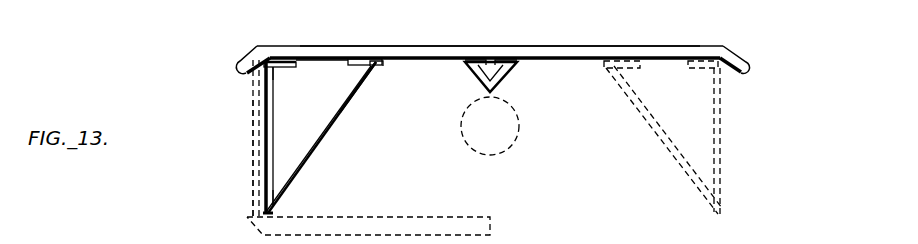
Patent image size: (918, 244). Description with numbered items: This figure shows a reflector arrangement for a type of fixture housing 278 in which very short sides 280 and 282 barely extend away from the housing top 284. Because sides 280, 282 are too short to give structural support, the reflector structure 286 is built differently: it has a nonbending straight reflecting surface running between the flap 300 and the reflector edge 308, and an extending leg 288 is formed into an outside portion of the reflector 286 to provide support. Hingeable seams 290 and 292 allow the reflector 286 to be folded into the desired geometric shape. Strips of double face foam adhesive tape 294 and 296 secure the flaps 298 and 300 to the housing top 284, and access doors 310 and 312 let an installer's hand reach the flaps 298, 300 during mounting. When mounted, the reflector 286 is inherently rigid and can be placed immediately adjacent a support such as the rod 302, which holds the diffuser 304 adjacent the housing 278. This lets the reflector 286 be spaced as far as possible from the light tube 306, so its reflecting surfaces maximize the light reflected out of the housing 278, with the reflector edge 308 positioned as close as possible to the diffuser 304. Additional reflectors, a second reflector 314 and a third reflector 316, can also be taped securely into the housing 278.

The housing 278 is at (745, 47).
The very short side 280 is at (250, 54).
The very short side 282 is at (752, 66).
The housing top 284 is at (527, 54).
The reflector structure 286 is at (349, 117).
The extending leg 288 is at (310, 137).
The hingeable seam 290 is at (273, 194).
The hingeable seam 292 is at (279, 78).
The double face foam adhesive tape 294 is at (288, 68).
The double face foam adhesive tape 296 is at (386, 61).
The flap 298 is at (284, 71).
The flap 300 is at (349, 60).
The rod 302 is at (250, 180).
The diffuser 304 is at (494, 226).
The light tube 306 is at (508, 150).
The reflector edge 308 is at (275, 211).
The access door 310 is at (370, 82).
The access door 312 is at (261, 82).
The second reflector 314 is at (510, 76).
The third reflector 316 is at (678, 162).